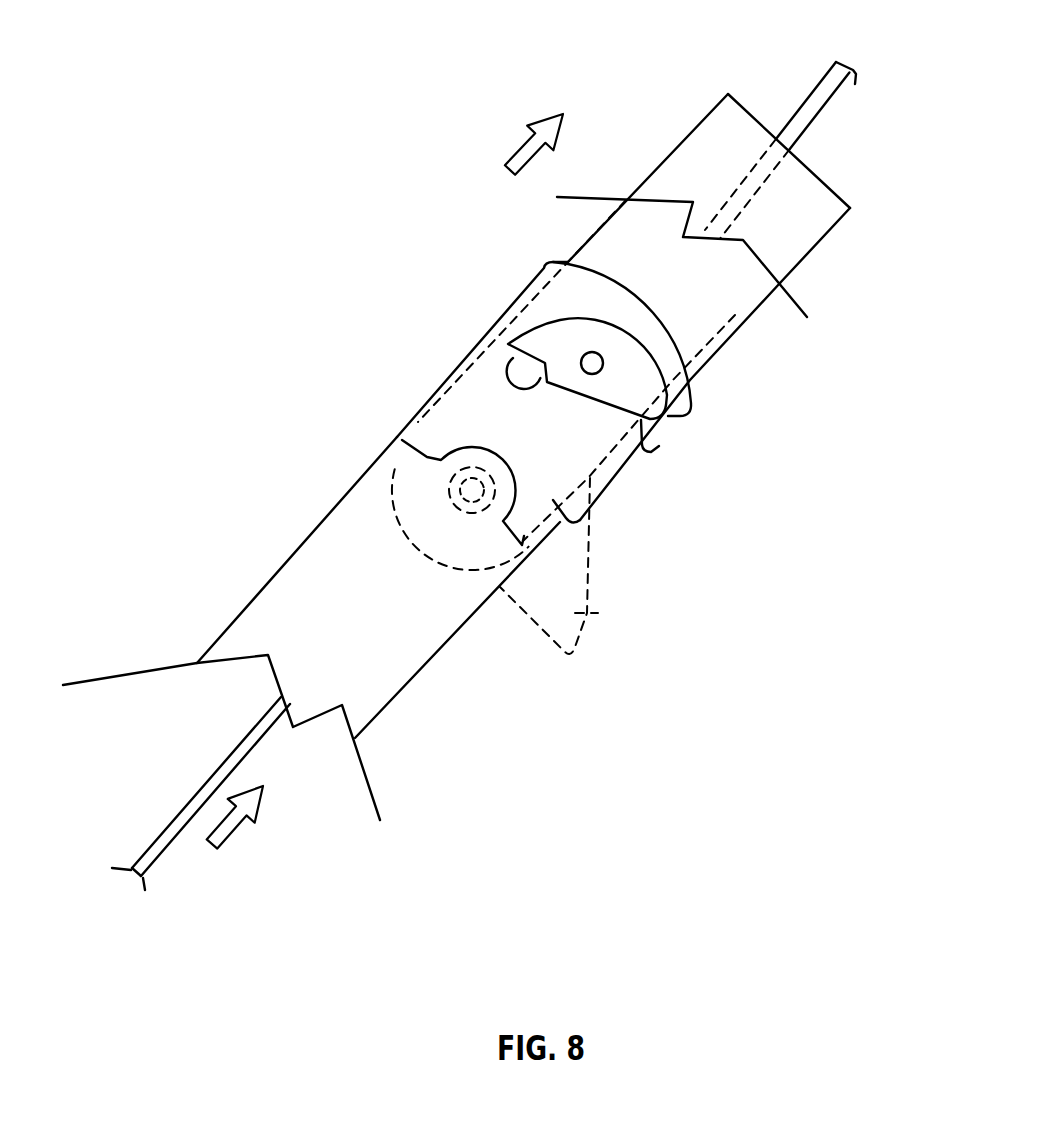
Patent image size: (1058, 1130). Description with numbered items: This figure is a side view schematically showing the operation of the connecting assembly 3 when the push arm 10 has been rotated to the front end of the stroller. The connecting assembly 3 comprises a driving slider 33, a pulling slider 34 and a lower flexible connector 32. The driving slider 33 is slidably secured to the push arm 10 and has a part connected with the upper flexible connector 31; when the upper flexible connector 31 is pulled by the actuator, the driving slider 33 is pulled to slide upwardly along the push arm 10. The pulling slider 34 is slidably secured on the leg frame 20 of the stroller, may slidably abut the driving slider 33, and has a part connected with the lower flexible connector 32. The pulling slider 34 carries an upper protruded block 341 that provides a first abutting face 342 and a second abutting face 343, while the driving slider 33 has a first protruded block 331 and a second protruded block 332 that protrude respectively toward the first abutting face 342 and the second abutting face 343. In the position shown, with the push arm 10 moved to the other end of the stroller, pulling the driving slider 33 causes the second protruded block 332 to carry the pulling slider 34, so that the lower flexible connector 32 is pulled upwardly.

The connecting assembly 3 is at (836, 482).
The push arm 10 is at (702, 153).
The leg frame 20 is at (375, 697).
The upper flexible connector 31 is at (835, 62).
The lower flexible connector 32 is at (150, 868).
The driving slider 33 is at (437, 390).
The pulling slider 34 is at (606, 493).
The first protruded block 331 is at (598, 613).
The second protruded block 332 is at (513, 372).
The upper protruded block 341 is at (653, 413).
The first abutting face 342 is at (650, 450).
The second abutting face 343 is at (560, 320).